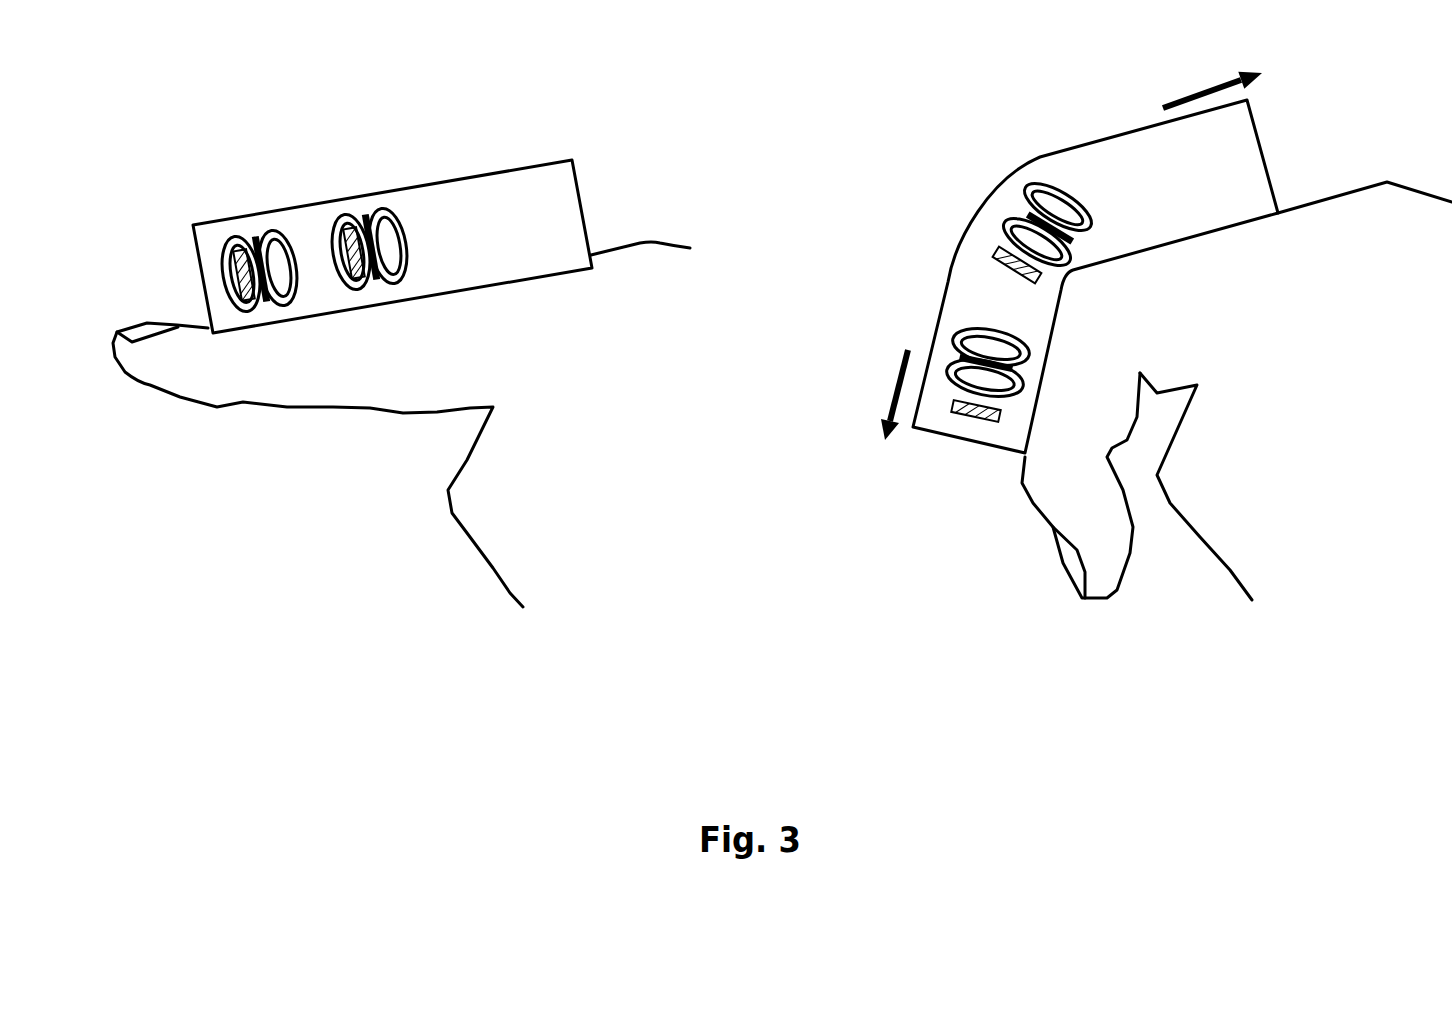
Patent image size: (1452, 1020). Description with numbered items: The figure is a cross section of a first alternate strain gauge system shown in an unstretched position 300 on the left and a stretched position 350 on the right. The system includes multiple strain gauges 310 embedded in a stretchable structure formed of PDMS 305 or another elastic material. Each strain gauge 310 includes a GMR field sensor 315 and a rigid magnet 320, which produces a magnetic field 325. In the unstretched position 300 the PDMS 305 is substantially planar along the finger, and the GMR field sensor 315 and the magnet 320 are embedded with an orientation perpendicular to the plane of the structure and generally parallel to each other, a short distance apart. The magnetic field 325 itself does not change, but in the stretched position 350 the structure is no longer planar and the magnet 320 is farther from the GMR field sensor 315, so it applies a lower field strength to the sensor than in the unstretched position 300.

The unstretched position 300 is at (345, 694).
The stretched position 350 is at (1138, 694).
The PDMS 305 is at (735, 276).
The strain gauge 310 is at (615, 320).
The GMR field sensor 315 is at (1047, 348).
The magnet 320 is at (955, 351).
The magnetic field 325 is at (980, 330).